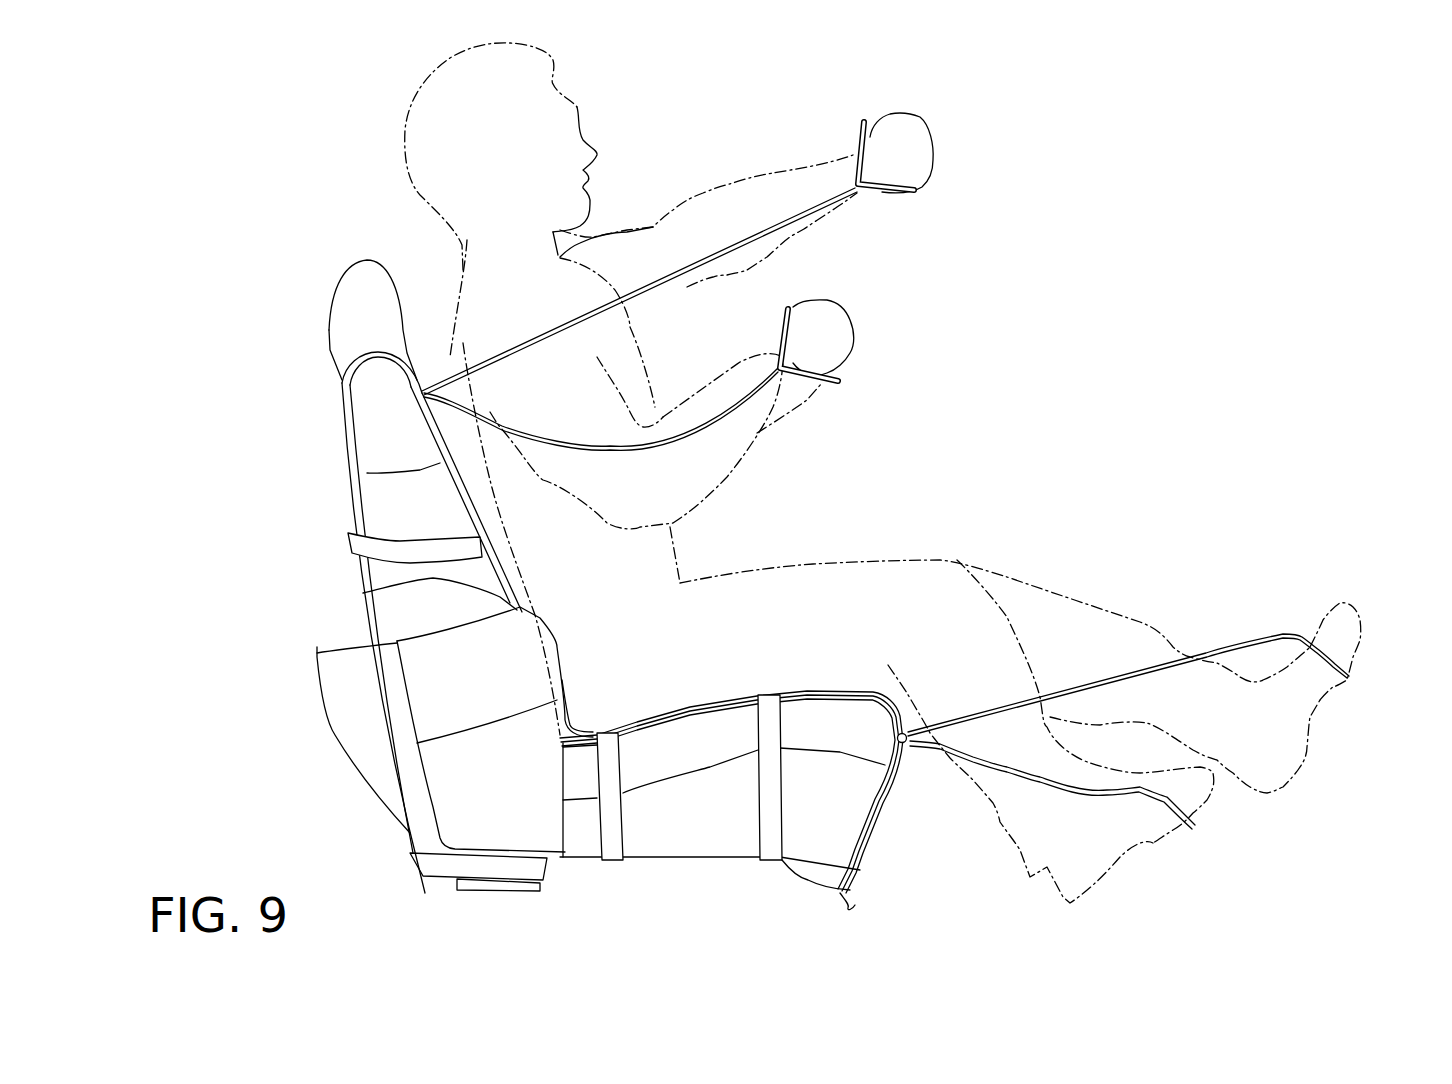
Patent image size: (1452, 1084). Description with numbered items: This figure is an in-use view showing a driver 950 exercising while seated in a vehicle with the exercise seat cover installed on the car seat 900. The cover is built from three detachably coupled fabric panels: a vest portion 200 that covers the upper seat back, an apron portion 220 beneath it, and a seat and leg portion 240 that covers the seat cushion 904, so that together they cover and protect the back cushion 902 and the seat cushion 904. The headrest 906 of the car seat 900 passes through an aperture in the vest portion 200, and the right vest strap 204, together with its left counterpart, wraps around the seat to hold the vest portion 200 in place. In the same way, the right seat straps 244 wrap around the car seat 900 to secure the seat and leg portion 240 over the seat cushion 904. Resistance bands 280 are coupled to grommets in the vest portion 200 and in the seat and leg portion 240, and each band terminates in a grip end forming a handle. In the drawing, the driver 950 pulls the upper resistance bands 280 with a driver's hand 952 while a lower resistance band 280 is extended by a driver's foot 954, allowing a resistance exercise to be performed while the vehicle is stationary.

The vest portion 200 is at (367, 473).
The right vest strap 204 is at (403, 550).
The apron portion 220 is at (363, 593).
The seat and leg portion 240 is at (737, 697).
The right seat straps 244 is at (757, 810).
The resistance bands 280 is at (683, 436).
The car seat 900 is at (545, 815).
The back cushion 902 is at (385, 618).
The seat cushion 904 is at (886, 740).
The headrest 906 is at (355, 283).
The driver 950 is at (815, 573).
The driver's hand 952 is at (835, 330).
The driver's foot 954 is at (1317, 680).